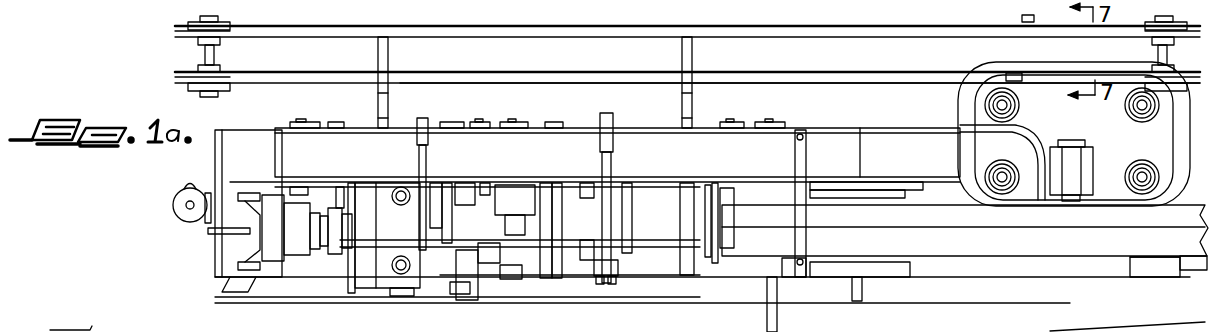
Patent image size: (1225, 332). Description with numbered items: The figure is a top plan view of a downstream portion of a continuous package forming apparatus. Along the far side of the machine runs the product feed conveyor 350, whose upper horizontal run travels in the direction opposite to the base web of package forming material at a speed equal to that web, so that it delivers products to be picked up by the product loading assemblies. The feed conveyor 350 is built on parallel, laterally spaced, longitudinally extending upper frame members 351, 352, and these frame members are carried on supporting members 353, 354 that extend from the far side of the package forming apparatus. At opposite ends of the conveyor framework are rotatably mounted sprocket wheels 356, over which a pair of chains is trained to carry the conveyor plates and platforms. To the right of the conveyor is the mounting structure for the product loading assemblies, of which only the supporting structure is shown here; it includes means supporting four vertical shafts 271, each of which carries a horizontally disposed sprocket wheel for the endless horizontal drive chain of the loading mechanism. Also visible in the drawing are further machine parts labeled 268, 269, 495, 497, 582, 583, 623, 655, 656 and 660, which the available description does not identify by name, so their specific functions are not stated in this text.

The product feed conveyor 350 is at (800, 28).
The upper frame member 351 is at (622, 34).
The upper frame member 352 is at (503, 72).
The supporting member 353 is at (378, 48).
The supporting member 354 is at (692, 52).
The sprocket wheel 356 is at (184, 37).
The stop block 268 is at (1012, 73).
The stop 269 is at (1022, 19).
The vertical shaft 271 is at (1002, 105).
The tube 495 is at (1052, 250).
The bolt bar 497 is at (742, 262).
The lever 582 is at (458, 186).
The block 583 is at (462, 300).
The bracket 623 is at (385, 290).
The pulley 655 is at (165, 207).
The cylinder 656 is at (302, 265).
The foot bracket 660 is at (225, 286).